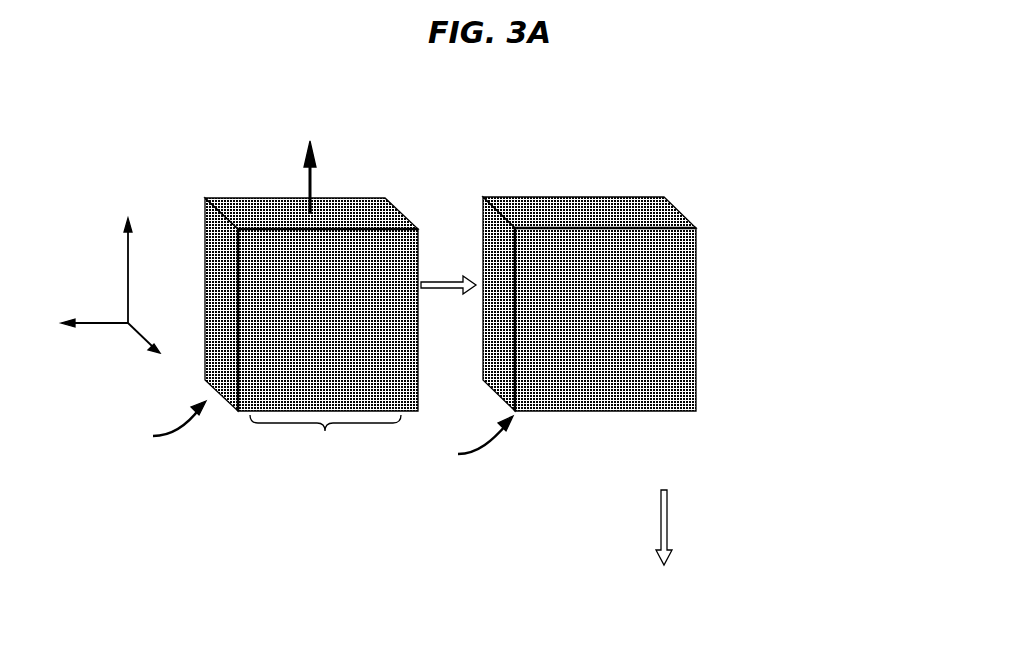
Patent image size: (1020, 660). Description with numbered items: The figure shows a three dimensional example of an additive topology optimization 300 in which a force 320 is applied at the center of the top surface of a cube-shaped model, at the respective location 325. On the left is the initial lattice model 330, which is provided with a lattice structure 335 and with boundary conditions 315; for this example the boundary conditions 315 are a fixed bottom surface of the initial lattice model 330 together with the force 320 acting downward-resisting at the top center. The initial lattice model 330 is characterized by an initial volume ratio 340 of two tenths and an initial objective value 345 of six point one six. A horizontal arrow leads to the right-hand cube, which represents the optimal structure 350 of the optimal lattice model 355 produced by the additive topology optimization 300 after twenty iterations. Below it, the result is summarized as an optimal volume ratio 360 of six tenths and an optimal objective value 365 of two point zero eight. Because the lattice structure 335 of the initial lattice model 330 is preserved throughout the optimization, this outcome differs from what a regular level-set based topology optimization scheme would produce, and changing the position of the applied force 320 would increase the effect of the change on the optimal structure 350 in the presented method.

The additive topology optimization 300 is at (498, 78).
The boundary conditions 315 is at (318, 481).
The force 320 is at (279, 142).
The location 325 is at (303, 205).
The initial lattice model 330 is at (160, 426).
The lattice structure 335 is at (201, 191).
The initial volume ratio 340 is at (728, 430).
The initial objective value 345 is at (777, 481).
The optimal structure 350 is at (570, 189).
The optimal lattice model 355 is at (469, 441).
The optimal volume ratio 360 is at (783, 575).
The optimal objective value 365 is at (838, 598).